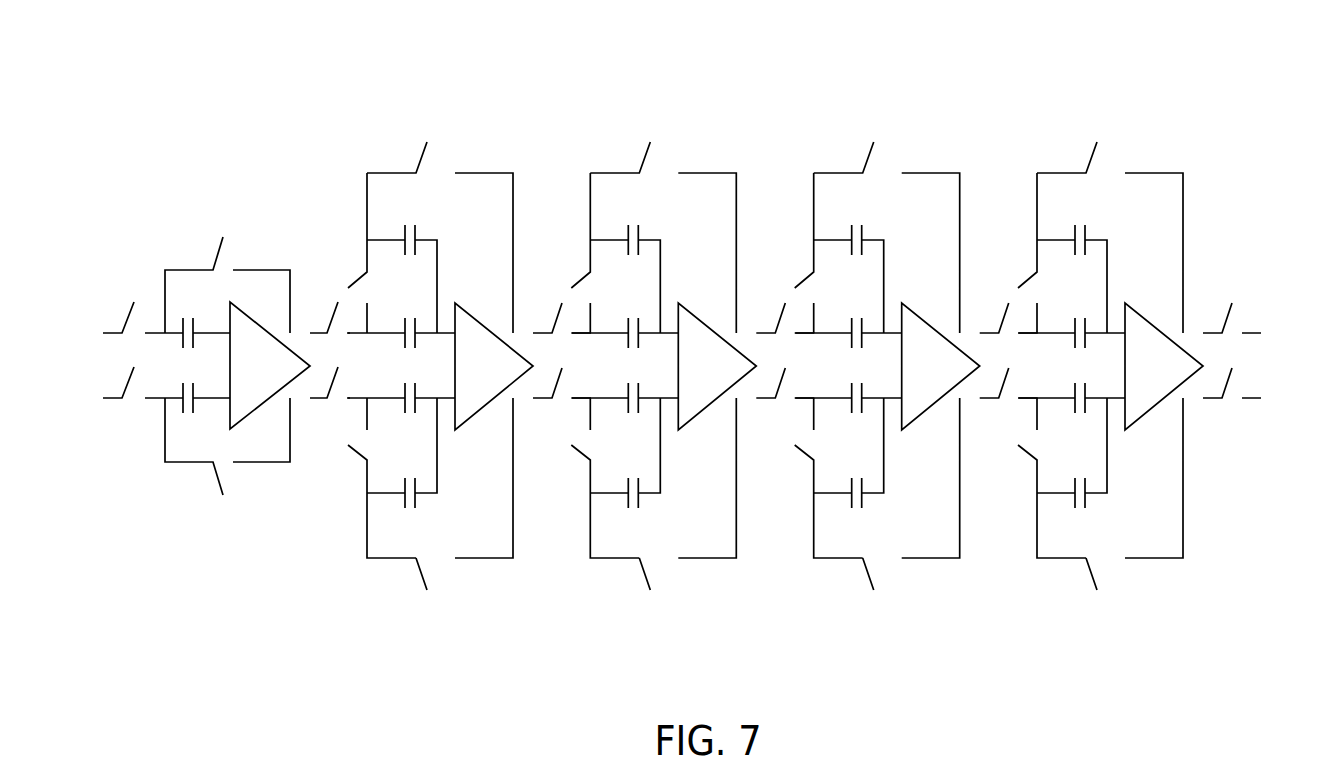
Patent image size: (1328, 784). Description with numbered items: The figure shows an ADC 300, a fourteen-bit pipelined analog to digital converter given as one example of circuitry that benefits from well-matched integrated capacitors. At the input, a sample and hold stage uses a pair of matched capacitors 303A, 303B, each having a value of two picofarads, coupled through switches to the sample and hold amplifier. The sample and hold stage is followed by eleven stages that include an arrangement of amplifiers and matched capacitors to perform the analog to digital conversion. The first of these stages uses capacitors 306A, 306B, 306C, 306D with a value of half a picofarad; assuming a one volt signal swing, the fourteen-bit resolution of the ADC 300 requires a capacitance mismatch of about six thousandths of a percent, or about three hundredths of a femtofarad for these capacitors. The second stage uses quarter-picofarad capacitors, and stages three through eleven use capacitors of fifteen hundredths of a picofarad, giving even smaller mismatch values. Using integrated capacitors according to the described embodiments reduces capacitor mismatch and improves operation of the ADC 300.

The ADC 300 is at (740, 63).
The matched capacitor 303A is at (180, 327).
The matched capacitor 303B is at (178, 405).
The capacitor 306A is at (402, 228).
The capacitor 306B is at (402, 327).
The capacitor 306C is at (402, 407).
The capacitor 306D is at (402, 503).